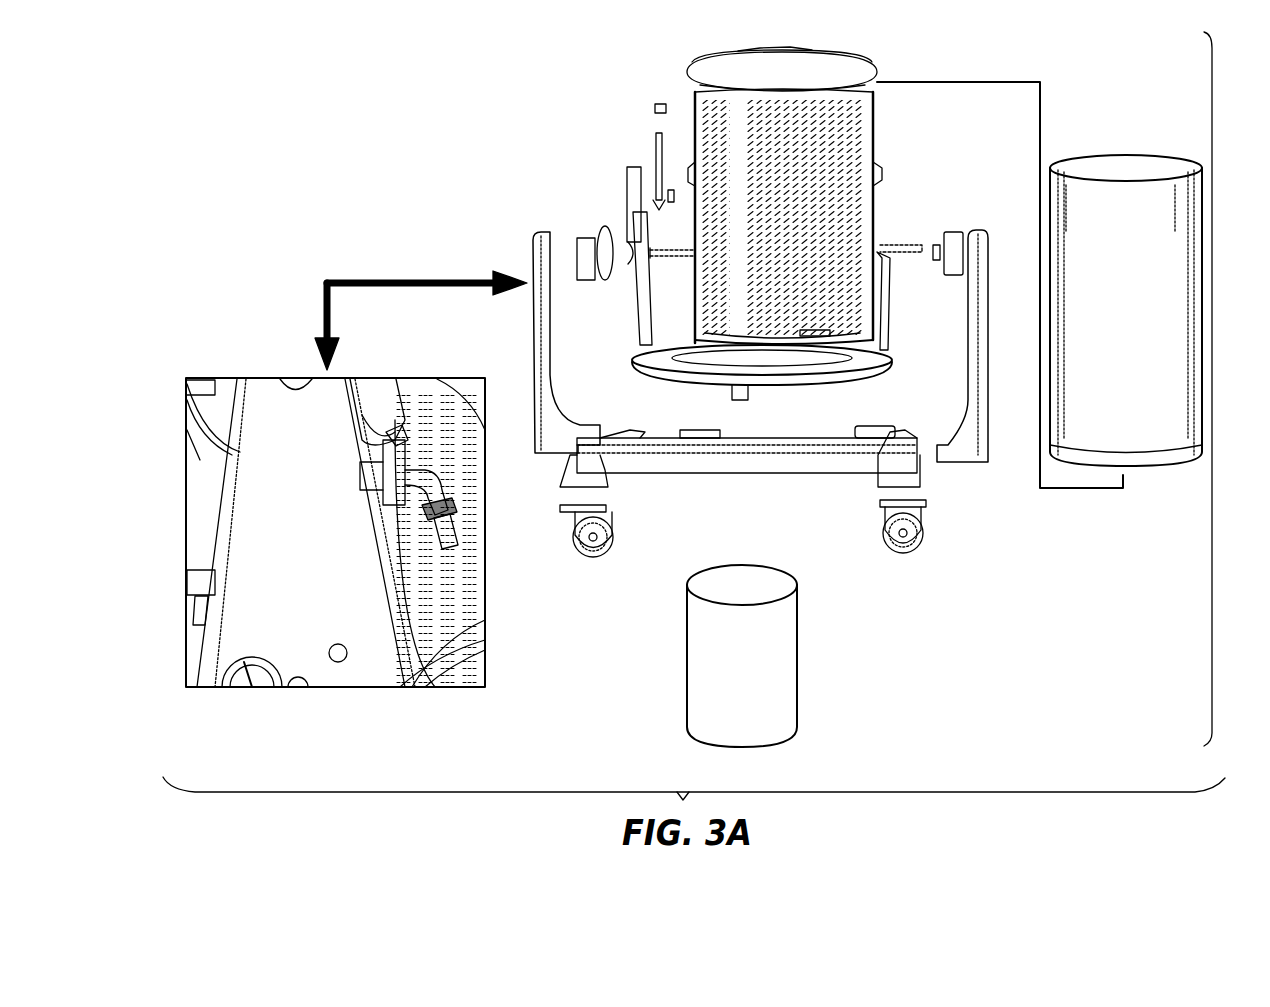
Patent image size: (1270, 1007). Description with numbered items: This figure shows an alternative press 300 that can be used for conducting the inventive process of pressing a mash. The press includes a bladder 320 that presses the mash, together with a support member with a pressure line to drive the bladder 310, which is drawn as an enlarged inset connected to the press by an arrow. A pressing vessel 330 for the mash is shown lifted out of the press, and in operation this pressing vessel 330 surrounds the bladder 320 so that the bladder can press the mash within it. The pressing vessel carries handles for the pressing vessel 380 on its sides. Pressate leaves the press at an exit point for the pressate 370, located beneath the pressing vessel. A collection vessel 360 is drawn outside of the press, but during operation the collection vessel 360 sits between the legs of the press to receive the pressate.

The press 300 is at (1212, 388).
The support member with pressure line 310 is at (268, 368).
The bladder 320 is at (1140, 432).
The pressing vessel 330 is at (874, 134).
The collection vessel 360 is at (762, 573).
The exit point for the pressate 370 is at (740, 400).
The handles for the pressing vessel 380 is at (690, 165).